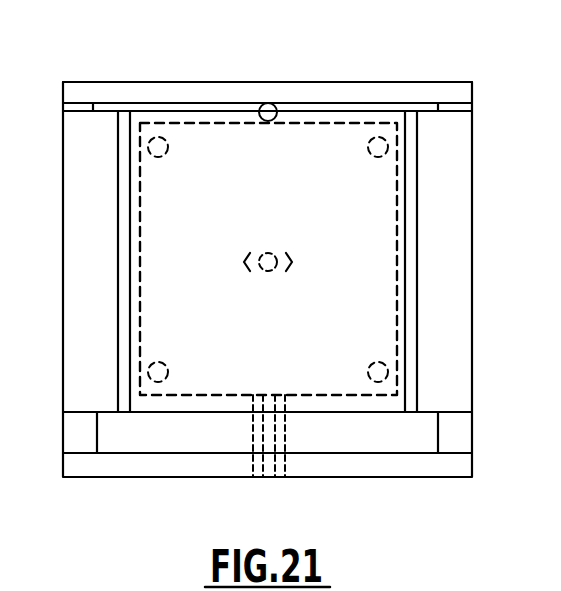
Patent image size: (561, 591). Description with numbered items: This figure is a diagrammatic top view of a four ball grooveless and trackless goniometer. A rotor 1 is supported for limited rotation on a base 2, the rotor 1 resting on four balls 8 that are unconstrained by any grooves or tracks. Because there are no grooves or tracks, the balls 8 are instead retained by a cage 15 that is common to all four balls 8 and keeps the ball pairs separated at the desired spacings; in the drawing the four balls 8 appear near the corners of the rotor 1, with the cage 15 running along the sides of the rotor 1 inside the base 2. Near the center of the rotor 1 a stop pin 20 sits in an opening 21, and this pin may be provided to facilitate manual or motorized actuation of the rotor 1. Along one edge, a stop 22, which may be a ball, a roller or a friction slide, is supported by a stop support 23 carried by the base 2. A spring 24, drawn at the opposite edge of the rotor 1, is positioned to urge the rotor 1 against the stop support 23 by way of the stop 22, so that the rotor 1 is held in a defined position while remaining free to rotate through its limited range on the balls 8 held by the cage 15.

The rotor 1 is at (333, 312).
The base 2 is at (445, 283).
The balls 8 is at (148, 152).
The cage 15 is at (411, 338).
The stop pin 20 is at (268, 252).
The opening 21 is at (247, 270).
The stop 22 is at (272, 105).
The stop support 23 is at (270, 82).
The spring 24 is at (288, 436).